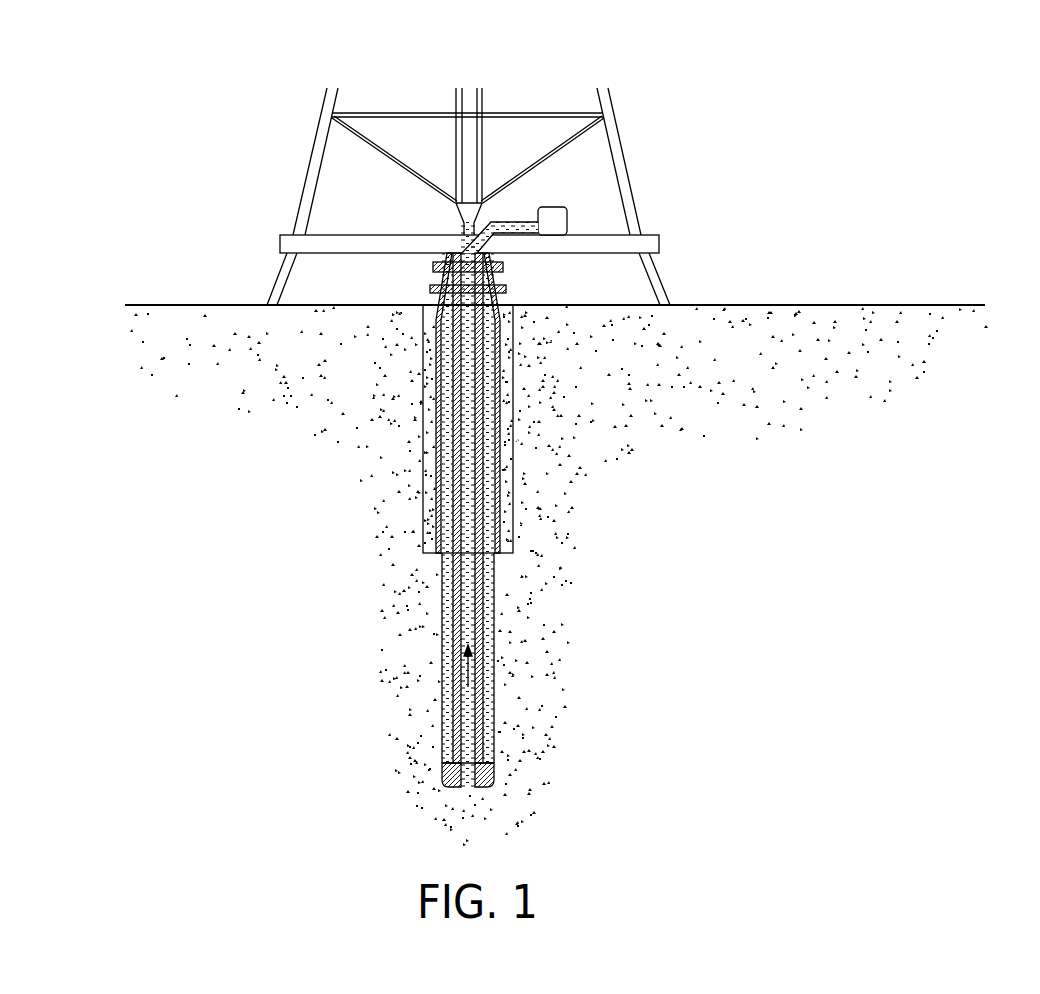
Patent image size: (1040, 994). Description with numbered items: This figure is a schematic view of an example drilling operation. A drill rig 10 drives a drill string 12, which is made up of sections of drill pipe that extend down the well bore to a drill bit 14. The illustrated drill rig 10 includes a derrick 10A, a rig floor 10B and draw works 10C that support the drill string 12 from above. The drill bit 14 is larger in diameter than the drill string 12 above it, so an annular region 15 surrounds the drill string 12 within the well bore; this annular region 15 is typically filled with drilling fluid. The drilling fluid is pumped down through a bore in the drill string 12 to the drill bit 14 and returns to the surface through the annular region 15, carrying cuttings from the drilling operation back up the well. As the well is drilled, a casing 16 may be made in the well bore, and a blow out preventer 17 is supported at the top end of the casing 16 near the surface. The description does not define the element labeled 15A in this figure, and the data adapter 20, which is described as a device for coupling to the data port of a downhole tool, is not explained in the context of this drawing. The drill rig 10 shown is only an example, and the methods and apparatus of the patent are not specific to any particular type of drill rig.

The drill rig 10 is at (424, 196).
The derrick 10A is at (323, 133).
The rig floor 10B is at (330, 235).
The draw works 10C is at (457, 222).
The drill string 12 is at (453, 614).
The drill bit 14 is at (453, 788).
The annular region 15 is at (442, 570).
The mud pump 15A is at (553, 207).
The casing 16 is at (423, 482).
The blow out preventer 17 is at (434, 267).
The data adapter 20 is at (455, 667).